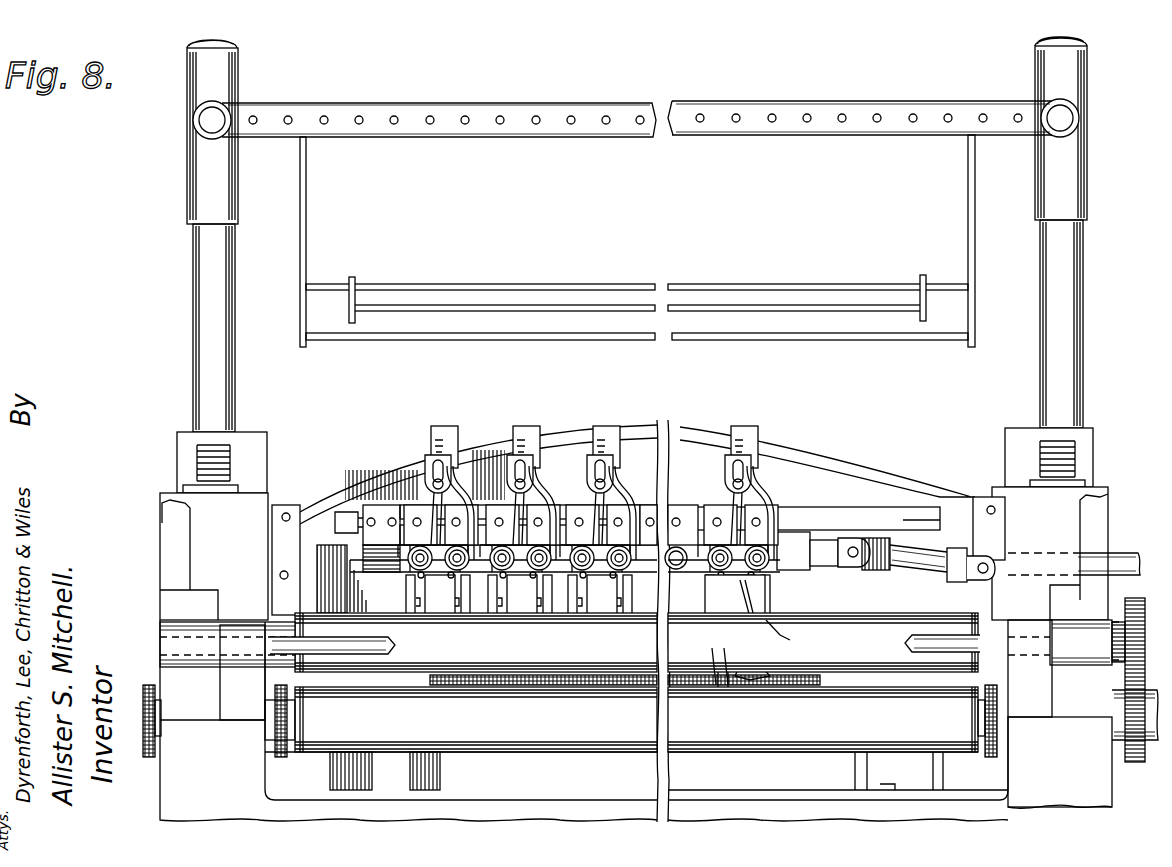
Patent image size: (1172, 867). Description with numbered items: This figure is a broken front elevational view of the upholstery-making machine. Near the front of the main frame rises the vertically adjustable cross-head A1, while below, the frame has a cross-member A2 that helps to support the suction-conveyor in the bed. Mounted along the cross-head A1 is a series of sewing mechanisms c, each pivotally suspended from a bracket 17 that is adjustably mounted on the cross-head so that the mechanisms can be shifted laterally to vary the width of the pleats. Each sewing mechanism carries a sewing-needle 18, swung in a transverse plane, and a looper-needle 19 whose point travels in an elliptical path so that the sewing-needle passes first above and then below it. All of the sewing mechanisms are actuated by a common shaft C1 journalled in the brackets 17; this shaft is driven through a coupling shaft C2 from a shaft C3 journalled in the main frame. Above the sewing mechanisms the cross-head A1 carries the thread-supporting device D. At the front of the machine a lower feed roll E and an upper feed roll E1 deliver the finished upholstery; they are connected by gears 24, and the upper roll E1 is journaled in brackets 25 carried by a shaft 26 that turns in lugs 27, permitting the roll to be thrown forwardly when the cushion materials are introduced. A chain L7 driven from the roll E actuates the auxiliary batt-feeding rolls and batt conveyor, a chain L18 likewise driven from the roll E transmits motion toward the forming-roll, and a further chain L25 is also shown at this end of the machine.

The brackets 17 is at (630, 520).
The sewing-needle 18 is at (760, 660).
The looper-needle 19 is at (735, 650).
The gears 24 is at (1120, 705).
The brackets 25 is at (160, 638).
The shaft 26 is at (397, 640).
The lugs 27 is at (1043, 735).
The chain L18 is at (273, 757).
The knob L25 is at (148, 758).
The chain L7 is at (990, 757).
The common shaft C1 is at (835, 547).
The coupling shaft C2 is at (927, 567).
The shaft C3 is at (1122, 557).
The cross-head A1 is at (953, 500).
The cross-member A2 is at (838, 769).
The thread-supporting device D is at (637, 241).
The lower front feed roll E is at (636, 719).
The upper front feed roll E1 is at (523, 600).
The sewing mechanisms c is at (448, 602).